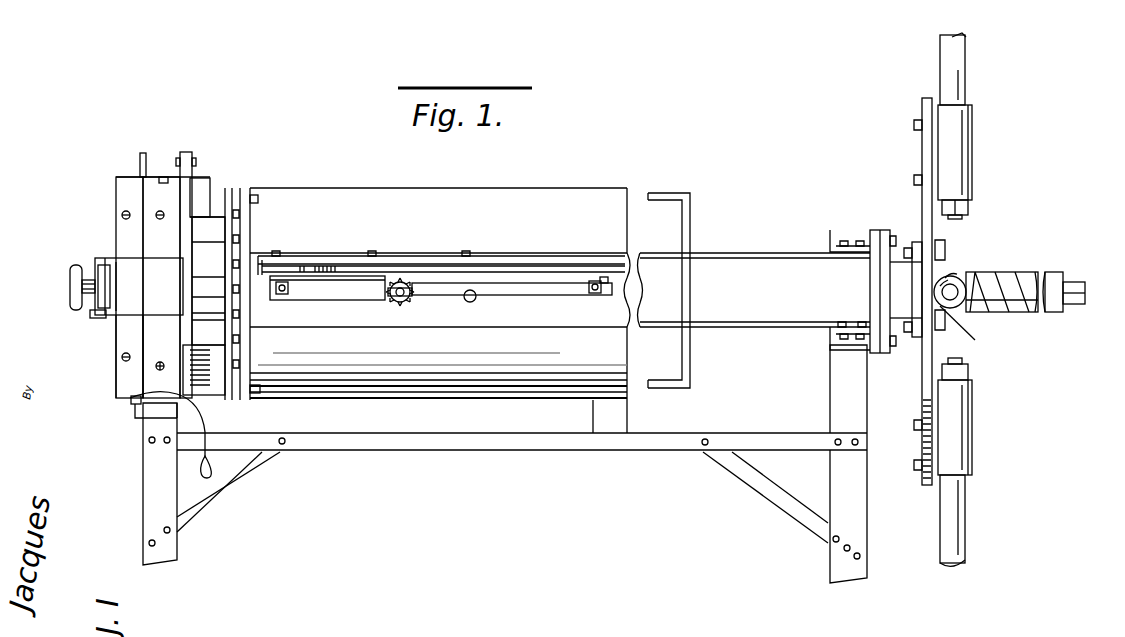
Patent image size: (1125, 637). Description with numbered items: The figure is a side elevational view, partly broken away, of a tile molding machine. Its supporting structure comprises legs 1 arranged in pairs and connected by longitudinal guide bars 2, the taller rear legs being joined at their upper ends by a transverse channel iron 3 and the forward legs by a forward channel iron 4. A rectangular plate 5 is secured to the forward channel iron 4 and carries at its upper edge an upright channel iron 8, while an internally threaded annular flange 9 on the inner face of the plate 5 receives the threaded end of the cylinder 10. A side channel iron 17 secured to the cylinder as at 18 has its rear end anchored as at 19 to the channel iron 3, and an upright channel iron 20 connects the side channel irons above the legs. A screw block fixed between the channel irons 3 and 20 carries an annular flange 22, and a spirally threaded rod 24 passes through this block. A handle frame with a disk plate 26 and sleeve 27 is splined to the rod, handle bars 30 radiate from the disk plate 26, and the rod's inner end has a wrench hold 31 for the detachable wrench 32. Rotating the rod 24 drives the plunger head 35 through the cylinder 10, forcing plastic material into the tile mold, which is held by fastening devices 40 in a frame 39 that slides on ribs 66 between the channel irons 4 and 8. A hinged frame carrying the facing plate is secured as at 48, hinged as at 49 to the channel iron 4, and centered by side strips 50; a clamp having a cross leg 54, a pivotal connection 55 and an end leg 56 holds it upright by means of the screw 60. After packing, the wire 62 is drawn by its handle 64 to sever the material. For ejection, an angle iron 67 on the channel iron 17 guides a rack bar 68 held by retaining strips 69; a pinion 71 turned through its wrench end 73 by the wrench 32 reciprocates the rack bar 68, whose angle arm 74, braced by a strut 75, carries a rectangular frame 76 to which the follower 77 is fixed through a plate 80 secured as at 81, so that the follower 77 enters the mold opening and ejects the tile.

The legs 1 is at (178, 551).
The longitudinal guide bars 2 is at (478, 452).
The transverse channel iron 3 is at (828, 340).
The forward channel iron 4 is at (137, 421).
The plate 5 is at (190, 172).
The upright channel iron 8 is at (146, 153).
The internally threaded annular flange 9 is at (403, 253).
The cylinder 10 is at (593, 195).
The side channel iron 17 is at (756, 305).
The securing means 18 is at (178, 224).
The anchoring 19 is at (860, 320).
The upright channel iron 20 is at (830, 238).
The annular flange 22 is at (880, 230).
The spirally threaded rod 24 is at (1033, 305).
The disk plate 26 is at (922, 146).
The sleeve 27 is at (913, 262).
The handle bars 30 is at (962, 100).
The wrench hold 31 is at (1080, 280).
The wrench or handle 32 is at (469, 303).
The plunger head 35 is at (692, 232).
The frame 39 is at (158, 356).
The fastening devices 40 is at (160, 220).
The securing means 48 is at (122, 215).
The hinge 49 is at (131, 402).
The side strips 50 is at (118, 338).
The cross leg 54 is at (92, 316).
The pivotal connection 55 is at (92, 270).
The end leg 56 is at (139, 286).
The screw 60 is at (70, 308).
The wire 62 is at (213, 421).
The handle 64 is at (210, 470).
The longitudinal ribs 66 is at (145, 188).
The angle iron 67 is at (340, 290).
The rack bar 68 is at (438, 282).
The retaining strips 69 is at (321, 264).
The pinion 71 is at (396, 280).
The key or wrench end 73 is at (393, 305).
The angle arm 74 is at (257, 256).
The strut 75 is at (291, 257).
The rectangular frame 76 is at (245, 188).
The follower 77 is at (204, 306).
The plate 80 is at (223, 202).
The securing means 81 is at (258, 197).